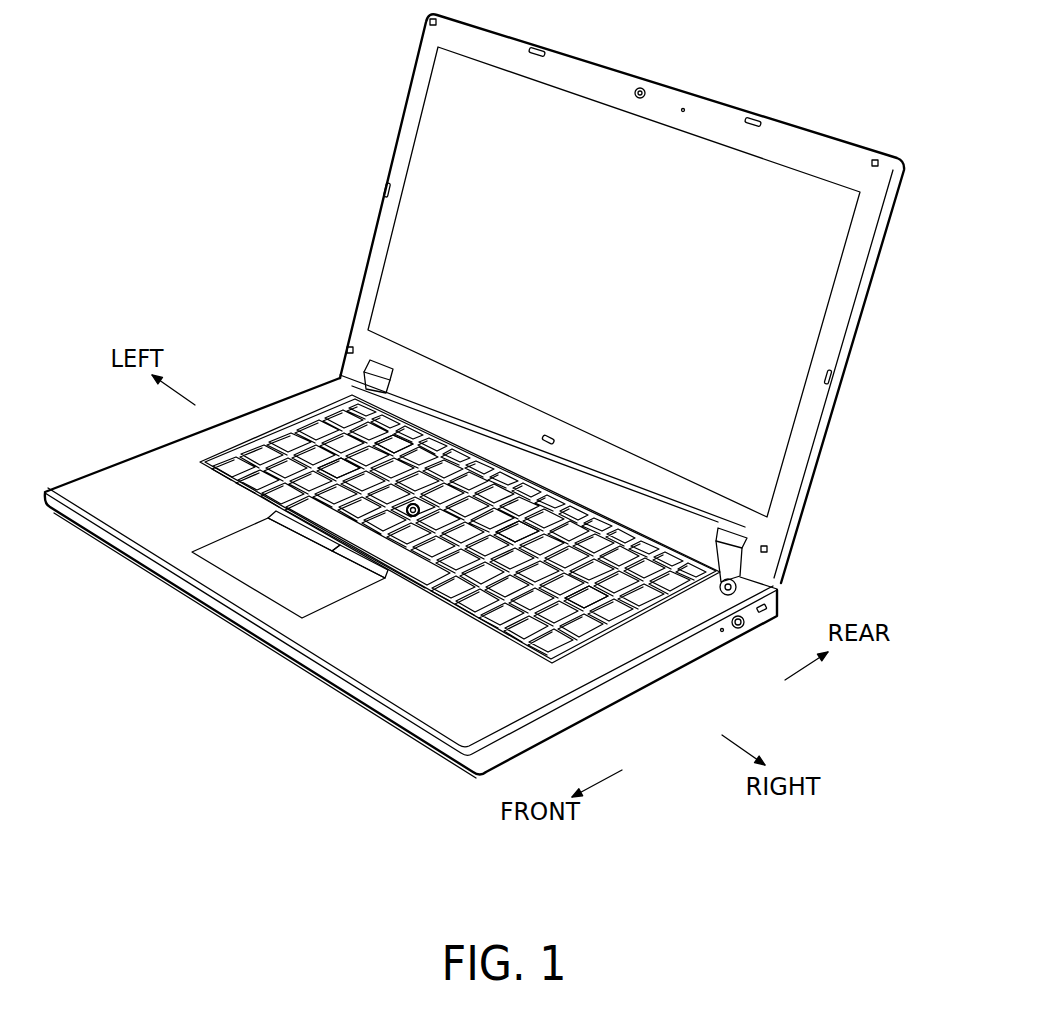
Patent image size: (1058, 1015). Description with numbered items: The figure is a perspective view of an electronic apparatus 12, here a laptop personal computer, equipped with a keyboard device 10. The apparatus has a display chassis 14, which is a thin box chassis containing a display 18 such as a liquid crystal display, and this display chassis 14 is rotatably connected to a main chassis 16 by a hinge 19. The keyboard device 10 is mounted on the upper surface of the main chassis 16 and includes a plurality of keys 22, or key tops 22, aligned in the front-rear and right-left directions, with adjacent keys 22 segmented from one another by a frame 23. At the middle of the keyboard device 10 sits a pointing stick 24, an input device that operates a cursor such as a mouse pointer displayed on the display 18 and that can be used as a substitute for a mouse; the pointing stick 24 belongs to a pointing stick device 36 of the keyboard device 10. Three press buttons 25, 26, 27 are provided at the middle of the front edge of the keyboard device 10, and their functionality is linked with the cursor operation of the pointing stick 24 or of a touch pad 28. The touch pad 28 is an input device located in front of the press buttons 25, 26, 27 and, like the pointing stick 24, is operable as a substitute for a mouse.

The keyboard device 10 is at (290, 437).
The electronic apparatus 12 is at (184, 86).
The display chassis 14 is at (876, 286).
The main chassis 16 is at (122, 526).
The display 18 is at (790, 333).
The hinge 19 is at (362, 372).
The keys 22 is at (338, 479).
The frame 23 is at (598, 640).
The pointing stick 24 is at (417, 503).
The pointing stick device 36 is at (413, 510).
The press button 25 is at (264, 517).
The press button 26 is at (330, 538).
The press button 27 is at (372, 565).
The touch pad 28 is at (253, 558).